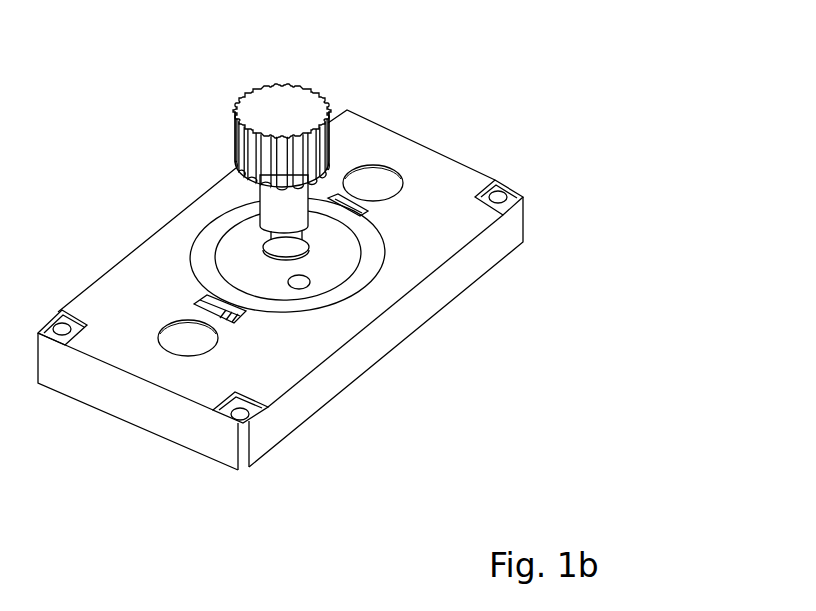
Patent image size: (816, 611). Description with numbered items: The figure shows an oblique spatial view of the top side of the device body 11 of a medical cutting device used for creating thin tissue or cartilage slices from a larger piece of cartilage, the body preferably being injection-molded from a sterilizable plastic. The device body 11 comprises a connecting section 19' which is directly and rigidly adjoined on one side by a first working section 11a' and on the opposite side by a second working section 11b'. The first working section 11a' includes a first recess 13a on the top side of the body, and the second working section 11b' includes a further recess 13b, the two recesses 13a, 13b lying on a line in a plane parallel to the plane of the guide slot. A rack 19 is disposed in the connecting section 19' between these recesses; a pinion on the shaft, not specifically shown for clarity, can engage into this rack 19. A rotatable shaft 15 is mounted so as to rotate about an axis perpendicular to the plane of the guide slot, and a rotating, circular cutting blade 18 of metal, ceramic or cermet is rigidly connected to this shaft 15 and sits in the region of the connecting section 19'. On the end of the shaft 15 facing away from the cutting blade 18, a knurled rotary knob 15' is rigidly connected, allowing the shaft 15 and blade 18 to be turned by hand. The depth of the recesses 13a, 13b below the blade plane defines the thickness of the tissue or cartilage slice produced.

The device body 11 is at (370, 353).
The first working section 11a' is at (95, 402).
The second working section 11b' is at (446, 131).
The first recess 13a is at (190, 343).
The further recess 13b is at (378, 182).
The rotatable shaft 15 is at (388, 256).
The rotary knob 15' is at (234, 131).
The cutting blade 18 is at (222, 220).
The rack 19 is at (141, 267).
The connecting section 19' is at (203, 192).